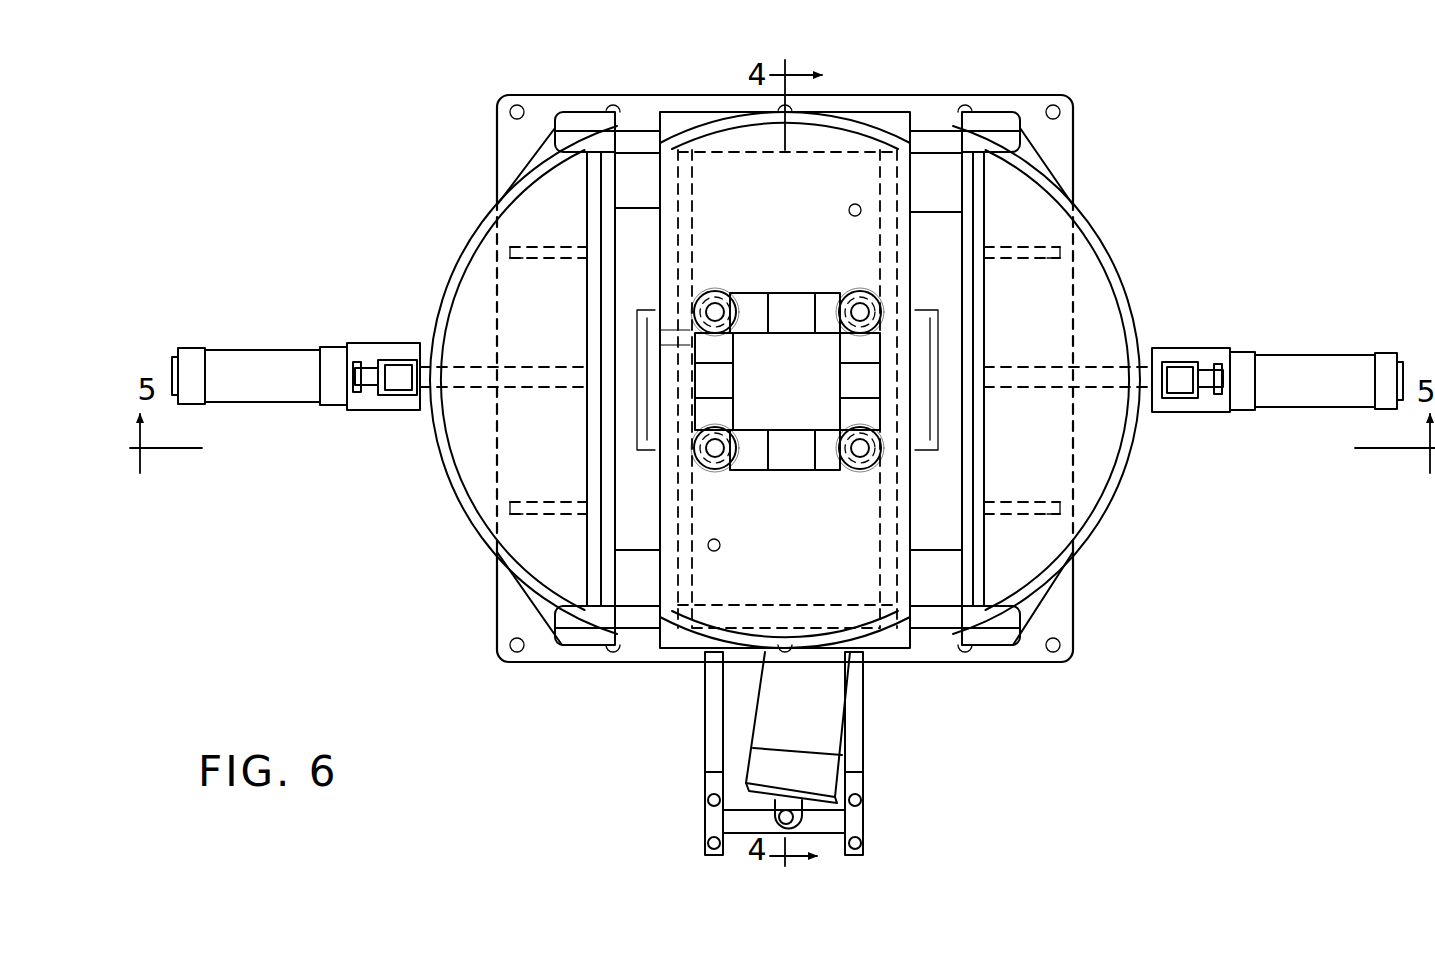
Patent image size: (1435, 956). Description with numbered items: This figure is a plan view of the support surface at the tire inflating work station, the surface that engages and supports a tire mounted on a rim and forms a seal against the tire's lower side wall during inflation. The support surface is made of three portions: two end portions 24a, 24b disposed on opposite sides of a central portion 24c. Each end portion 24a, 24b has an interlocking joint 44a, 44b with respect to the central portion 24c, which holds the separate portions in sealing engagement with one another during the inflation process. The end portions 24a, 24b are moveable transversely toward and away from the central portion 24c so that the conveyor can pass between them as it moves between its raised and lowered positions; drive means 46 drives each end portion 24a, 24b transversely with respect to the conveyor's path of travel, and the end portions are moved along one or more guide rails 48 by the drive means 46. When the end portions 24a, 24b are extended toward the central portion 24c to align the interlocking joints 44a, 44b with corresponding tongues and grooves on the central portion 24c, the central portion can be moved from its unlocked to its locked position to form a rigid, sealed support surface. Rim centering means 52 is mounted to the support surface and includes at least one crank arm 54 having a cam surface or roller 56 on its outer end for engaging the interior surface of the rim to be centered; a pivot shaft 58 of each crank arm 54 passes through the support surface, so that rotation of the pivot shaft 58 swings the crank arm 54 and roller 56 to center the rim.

The end portion 24a is at (478, 445).
The end portion 24b is at (1098, 478).
The central portion 24c is at (858, 142).
The interlocking joint 44a is at (618, 587).
The interlocking joint 44b is at (915, 588).
The drive means 46 is at (278, 393).
The guide rail 48 is at (522, 252).
The rim centering means 52 is at (683, 337).
The crank arm 54 is at (783, 300).
The cam surface or roller 56 is at (712, 292).
The pivot shaft 58 is at (694, 300).